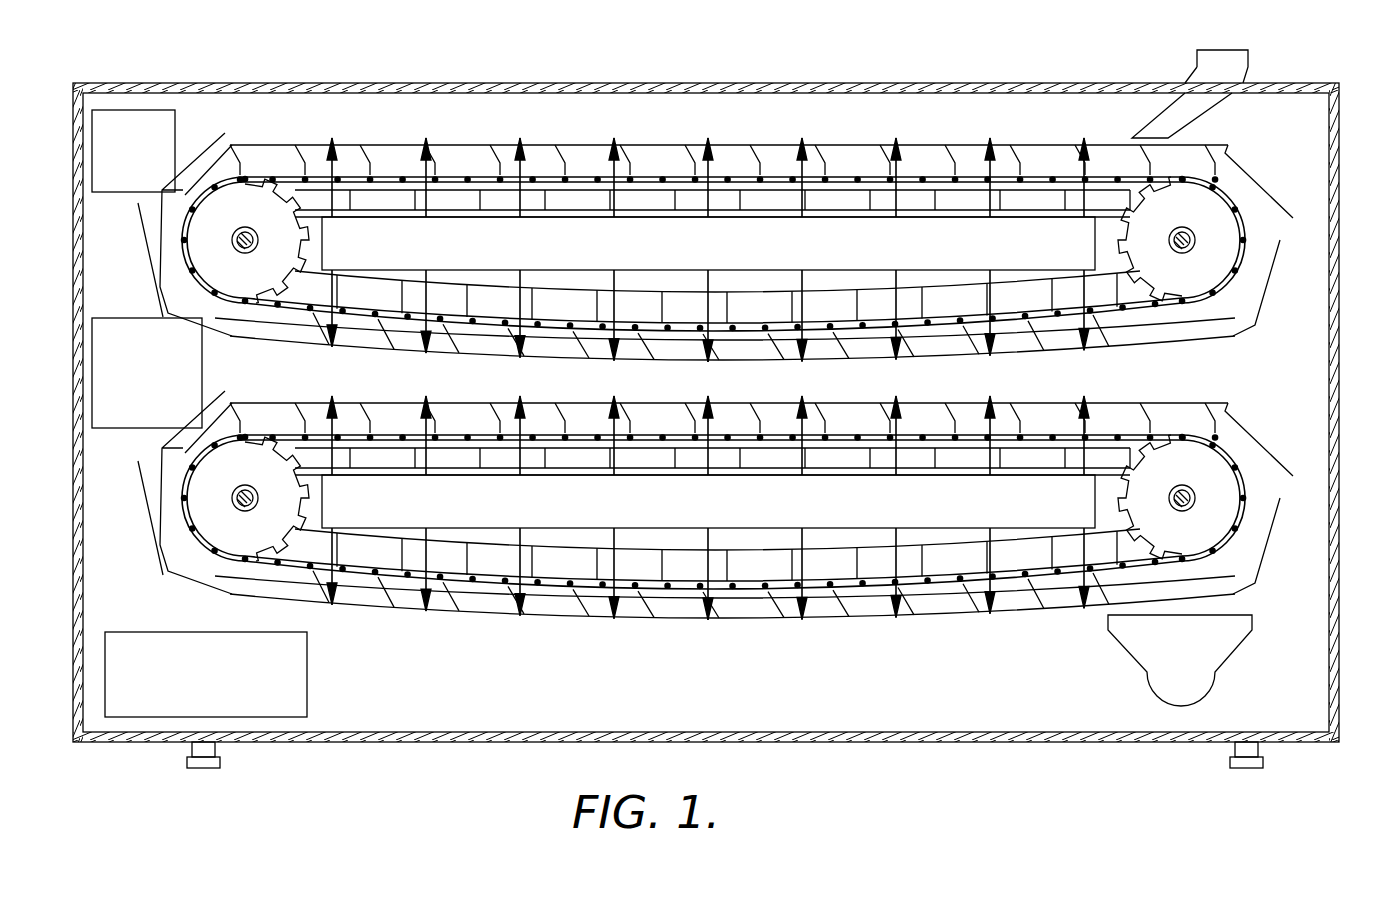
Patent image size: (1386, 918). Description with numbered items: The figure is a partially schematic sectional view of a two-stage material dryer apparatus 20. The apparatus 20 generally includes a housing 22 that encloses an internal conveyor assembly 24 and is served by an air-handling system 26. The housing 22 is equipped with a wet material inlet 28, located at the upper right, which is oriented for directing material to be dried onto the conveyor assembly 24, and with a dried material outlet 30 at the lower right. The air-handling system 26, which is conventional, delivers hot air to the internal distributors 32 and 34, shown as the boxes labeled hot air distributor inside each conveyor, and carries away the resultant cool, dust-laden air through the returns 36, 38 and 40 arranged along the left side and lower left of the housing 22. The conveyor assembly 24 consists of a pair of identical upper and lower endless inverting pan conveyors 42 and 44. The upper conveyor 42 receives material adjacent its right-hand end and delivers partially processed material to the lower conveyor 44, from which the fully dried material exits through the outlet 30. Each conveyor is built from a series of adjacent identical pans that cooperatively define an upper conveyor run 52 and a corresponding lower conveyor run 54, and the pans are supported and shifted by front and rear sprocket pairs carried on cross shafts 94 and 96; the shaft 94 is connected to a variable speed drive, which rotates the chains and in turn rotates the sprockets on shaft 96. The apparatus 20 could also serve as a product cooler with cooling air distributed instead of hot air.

The dryer apparatus 20 is at (706, 395).
The housing 22 is at (848, 76).
The conveyor assembly 24 is at (1268, 140).
The air-handling system 26 is at (1028, 216).
The wet material inlet 28 is at (1215, 62).
The dried material outlet 30 is at (1157, 676).
The internal distributor 32 is at (708, 243).
The internal distributor 34 is at (708, 501).
The cool dust-laden air return 36 is at (293, 689).
The cool dust-laden air return 38 is at (183, 373).
The cool dust-laden air return 40 is at (122, 180).
The upper endless inverting pan conveyor 42 is at (715, 218).
The lower endless inverting pan conveyor 44 is at (556, 627).
The upper conveyor run 52 is at (670, 136).
The lower conveyor run 54 is at (396, 360).
The cross shaft 94 is at (258, 238).
The cross shaft 96 is at (1170, 240).